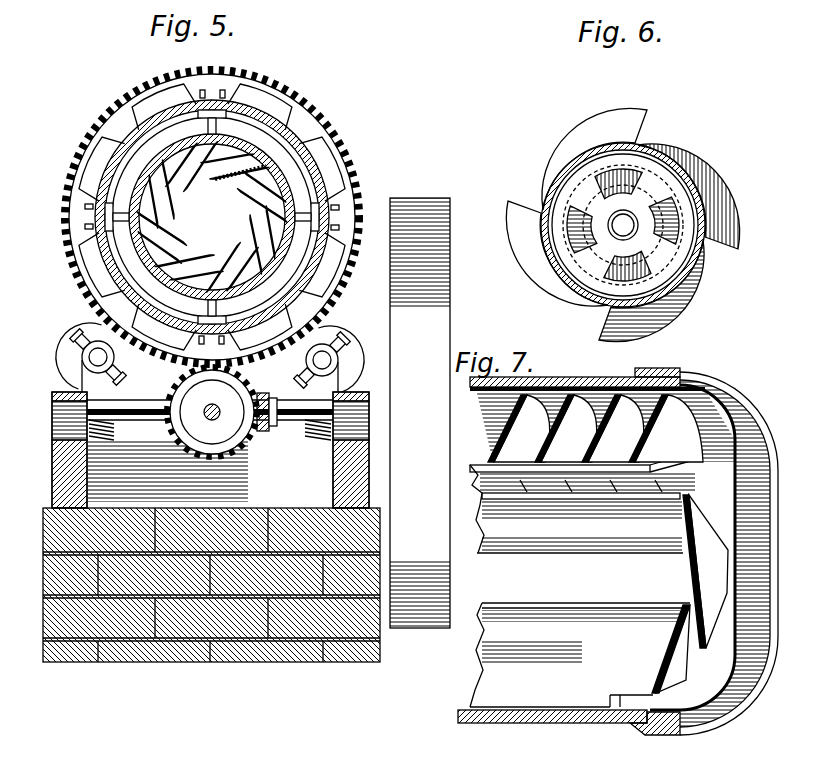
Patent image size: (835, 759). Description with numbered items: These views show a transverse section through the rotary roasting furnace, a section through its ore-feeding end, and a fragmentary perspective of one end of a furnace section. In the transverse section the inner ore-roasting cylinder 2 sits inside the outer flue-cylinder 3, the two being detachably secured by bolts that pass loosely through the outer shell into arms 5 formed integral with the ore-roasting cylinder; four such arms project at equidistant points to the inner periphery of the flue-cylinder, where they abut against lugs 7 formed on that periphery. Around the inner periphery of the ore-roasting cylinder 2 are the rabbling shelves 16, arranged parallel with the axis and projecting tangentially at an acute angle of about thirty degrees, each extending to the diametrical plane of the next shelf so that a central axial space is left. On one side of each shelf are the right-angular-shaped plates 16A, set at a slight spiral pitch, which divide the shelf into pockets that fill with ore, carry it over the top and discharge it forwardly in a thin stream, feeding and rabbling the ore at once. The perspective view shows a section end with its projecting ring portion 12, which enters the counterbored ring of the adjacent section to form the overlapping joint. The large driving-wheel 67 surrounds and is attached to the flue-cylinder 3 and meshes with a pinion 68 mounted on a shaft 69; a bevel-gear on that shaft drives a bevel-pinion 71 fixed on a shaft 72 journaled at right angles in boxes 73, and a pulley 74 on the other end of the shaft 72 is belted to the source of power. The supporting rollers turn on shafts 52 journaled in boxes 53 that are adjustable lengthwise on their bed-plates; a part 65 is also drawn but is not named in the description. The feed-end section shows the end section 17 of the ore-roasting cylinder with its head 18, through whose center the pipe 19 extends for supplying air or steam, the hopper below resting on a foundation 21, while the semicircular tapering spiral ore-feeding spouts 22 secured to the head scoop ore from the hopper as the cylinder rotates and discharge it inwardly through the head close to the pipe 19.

In FIG. 5, the ore-roasting cylinder 2 is at (212, 217).
In FIG. 6, the ore-roasting cylinder 2 is at (641, 148).
In FIG. 7, the ore-roasting cylinder 2 is at (573, 723).
In FIG. 5, the flue-cylinder 3 is at (308, 189).
In FIG. 5, the arms 5 is at (222, 120).
In FIG. 5, the lugs 7 is at (197, 117).
In FIG. 7, the projecting ring portion 12 is at (705, 379).
In FIG. 5, the shelves 16 is at (178, 212).
In FIG. 7, the shelves 16 is at (491, 470).
In FIG. 5, the right-angular-shaped plates 16A is at (244, 153).
In FIG. 7, the right-angular-shaped plates 16A is at (672, 671).
In FIG. 6, the end section 17 is at (541, 203).
In FIG. 6, the head 18 is at (681, 260).
In FIG. 6, the pipe 19 is at (623, 225).
In FIG. 5, the foundation 21 is at (293, 532).
In FIG. 6, the spiral ore-feeding spouts 22 is at (580, 116).
In FIG. 5, the shafts 52 is at (90, 357).
In FIG. 5, the boxes 53 is at (76, 333).
In FIG. 5, the spring 65 is at (110, 429).
In FIG. 5, the driving-wheel 67 is at (309, 114).
In FIG. 5, the pinion 68 is at (243, 450).
In FIG. 5, the shaft 69 is at (206, 407).
In FIG. 5, the bevel-pinion 71 is at (270, 432).
In FIG. 5, the shaft 72 is at (139, 398).
In FIG. 5, the boxes 73 is at (52, 403).
In FIG. 5, the pulley 74 is at (420, 413).